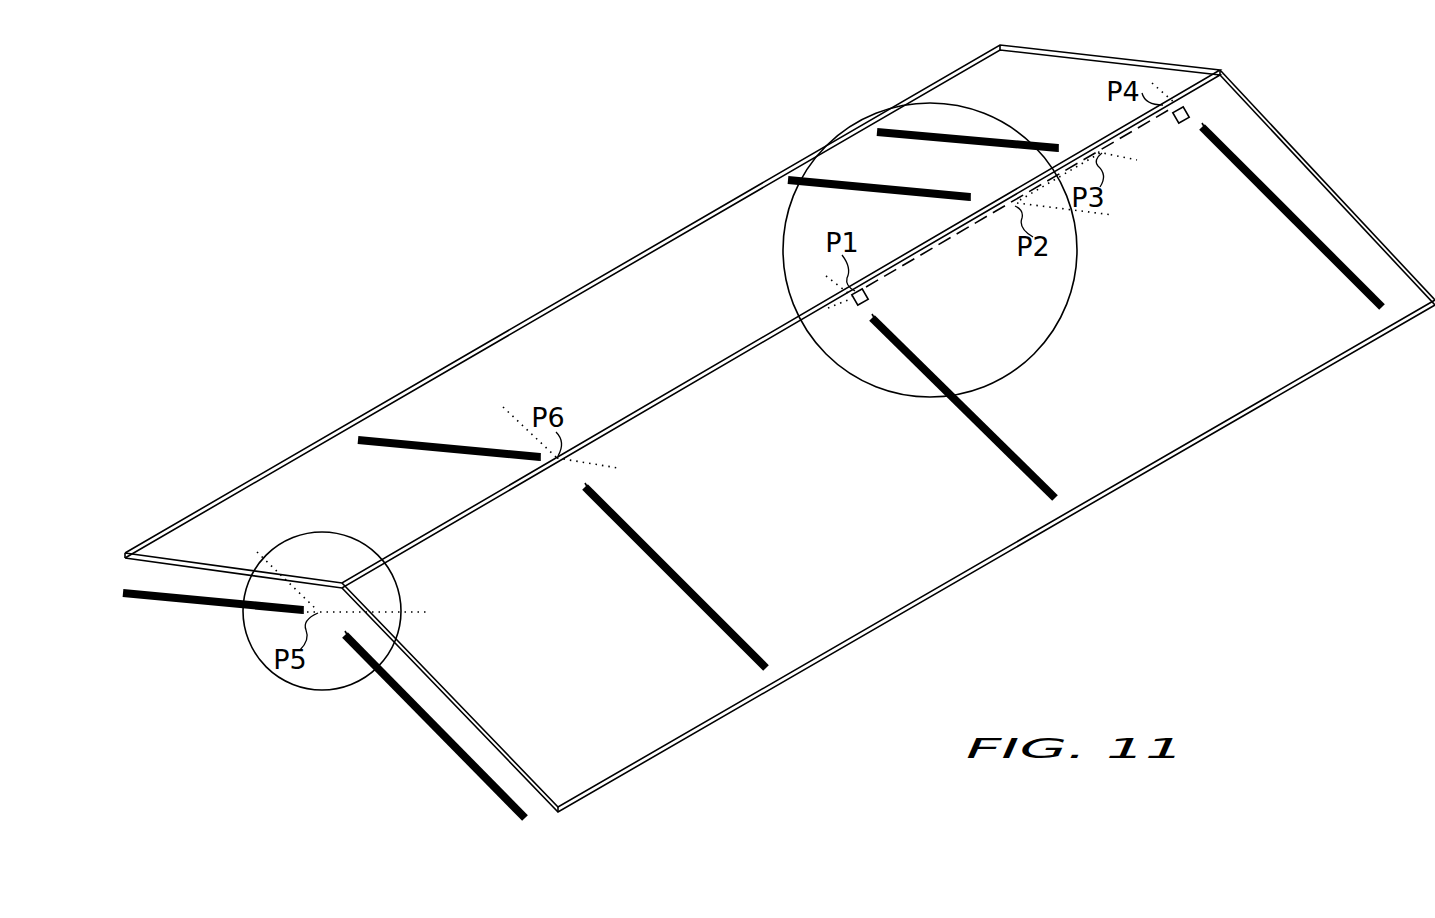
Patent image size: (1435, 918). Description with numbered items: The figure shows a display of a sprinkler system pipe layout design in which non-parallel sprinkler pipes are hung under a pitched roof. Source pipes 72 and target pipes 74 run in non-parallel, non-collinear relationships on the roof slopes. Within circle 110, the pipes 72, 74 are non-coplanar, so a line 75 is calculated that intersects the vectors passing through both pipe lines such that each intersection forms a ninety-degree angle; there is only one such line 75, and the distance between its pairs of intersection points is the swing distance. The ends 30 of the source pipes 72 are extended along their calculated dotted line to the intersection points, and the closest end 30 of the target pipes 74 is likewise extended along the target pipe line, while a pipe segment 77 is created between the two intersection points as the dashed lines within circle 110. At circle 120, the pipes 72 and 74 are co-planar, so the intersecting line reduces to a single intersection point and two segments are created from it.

The pipe end 30 is at (303, 617).
The source pipe 72 is at (222, 612).
The target pipe 74 is at (401, 712).
The dotted line 75 is at (847, 302).
The pipe segment 77 is at (940, 248).
The circle 110 is at (1080, 300).
The circle 120 is at (408, 585).